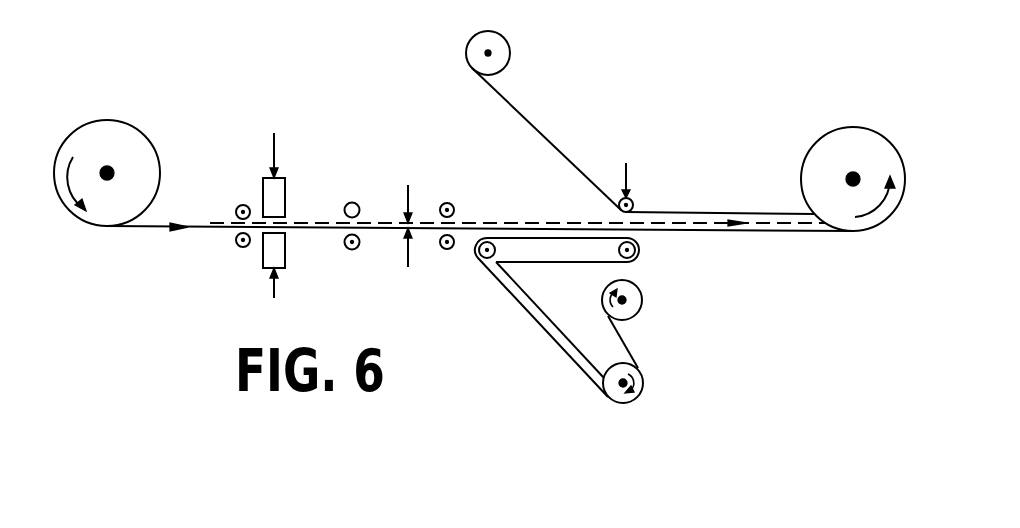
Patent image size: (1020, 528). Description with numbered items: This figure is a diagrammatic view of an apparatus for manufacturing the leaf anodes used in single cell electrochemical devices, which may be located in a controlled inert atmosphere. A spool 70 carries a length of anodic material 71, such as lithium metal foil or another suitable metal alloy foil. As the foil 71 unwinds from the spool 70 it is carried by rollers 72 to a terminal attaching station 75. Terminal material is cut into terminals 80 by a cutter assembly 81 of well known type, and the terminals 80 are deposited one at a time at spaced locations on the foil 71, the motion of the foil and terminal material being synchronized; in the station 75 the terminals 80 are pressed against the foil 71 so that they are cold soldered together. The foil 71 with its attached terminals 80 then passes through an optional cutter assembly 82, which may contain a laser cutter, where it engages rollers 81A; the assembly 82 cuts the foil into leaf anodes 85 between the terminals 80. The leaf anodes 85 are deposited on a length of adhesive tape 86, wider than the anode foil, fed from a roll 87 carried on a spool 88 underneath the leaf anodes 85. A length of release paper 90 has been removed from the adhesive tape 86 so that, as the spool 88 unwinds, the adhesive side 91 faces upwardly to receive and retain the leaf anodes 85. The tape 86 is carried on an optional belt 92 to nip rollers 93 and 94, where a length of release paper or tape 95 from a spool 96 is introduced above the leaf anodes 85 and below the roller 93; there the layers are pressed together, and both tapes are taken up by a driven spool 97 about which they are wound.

The spool 70 is at (128, 152).
The anodic material foil 71 is at (200, 230).
The rollers 72 is at (243, 248).
The terminal attaching station 75 is at (292, 162).
The terminals 80 is at (222, 223).
The cutter assembly 81 is at (350, 203).
The rollers 81A is at (453, 206).
The cutter assembly 82 is at (460, 179).
The leaf anodes 85 is at (424, 234).
The adhesive tape 86 is at (513, 305).
The roll 87 is at (630, 403).
The spool 88 is at (638, 385).
The release paper 90 is at (622, 335).
The adhesive side 91 is at (552, 345).
The belt 92 is at (583, 273).
The nip roller 93 is at (634, 197).
The nip roller 94 is at (636, 250).
The release paper or tape 95 is at (538, 128).
The spool 96 is at (497, 46).
The driven spool 97 is at (873, 148).